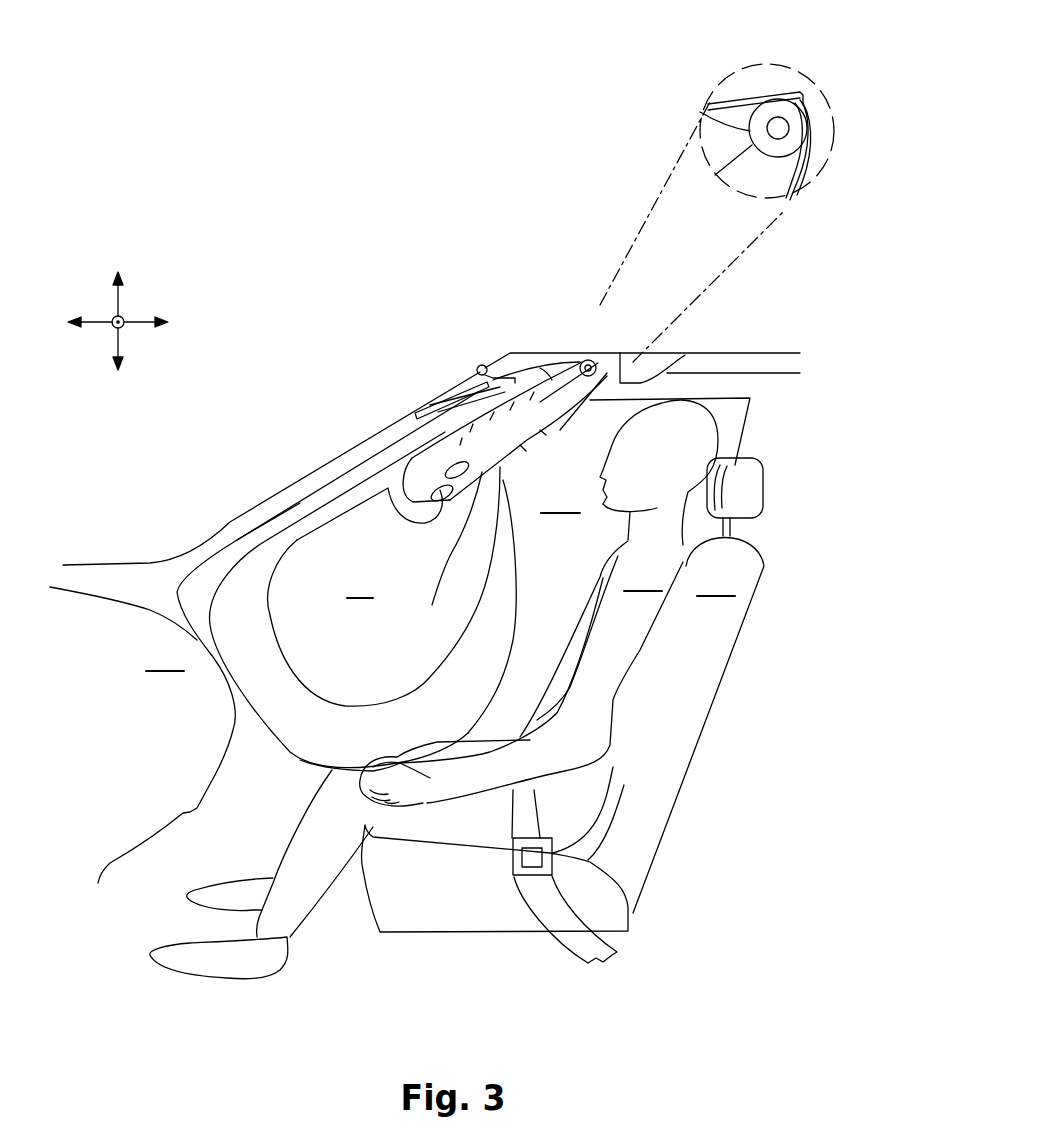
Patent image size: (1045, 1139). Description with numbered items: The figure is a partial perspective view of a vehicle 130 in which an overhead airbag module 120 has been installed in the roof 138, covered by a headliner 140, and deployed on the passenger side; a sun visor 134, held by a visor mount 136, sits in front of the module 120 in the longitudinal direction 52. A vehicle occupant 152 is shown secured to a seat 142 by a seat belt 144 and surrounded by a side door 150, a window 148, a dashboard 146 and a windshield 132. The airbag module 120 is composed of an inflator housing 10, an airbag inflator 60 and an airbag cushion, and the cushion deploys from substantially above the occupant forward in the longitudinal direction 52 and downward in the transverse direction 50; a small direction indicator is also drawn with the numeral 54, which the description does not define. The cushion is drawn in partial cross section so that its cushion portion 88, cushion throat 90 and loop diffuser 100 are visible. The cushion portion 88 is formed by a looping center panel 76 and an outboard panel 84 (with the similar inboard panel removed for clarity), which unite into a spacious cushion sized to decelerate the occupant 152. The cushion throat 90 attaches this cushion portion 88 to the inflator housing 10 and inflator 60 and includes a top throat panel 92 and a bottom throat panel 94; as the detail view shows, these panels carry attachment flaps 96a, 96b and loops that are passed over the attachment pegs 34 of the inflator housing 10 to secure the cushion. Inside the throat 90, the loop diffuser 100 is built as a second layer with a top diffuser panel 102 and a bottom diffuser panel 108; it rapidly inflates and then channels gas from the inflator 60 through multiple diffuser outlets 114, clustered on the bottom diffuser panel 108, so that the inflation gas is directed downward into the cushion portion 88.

The inflator housing 10 is at (703, 110).
The attachment pegs 34 is at (800, 100).
The transverse direction 50 is at (118, 300).
The longitudinal direction 52 is at (135, 320).
The downward direction 54 is at (120, 328).
The airbag inflator 60 is at (800, 130).
The looping center panel 76 is at (252, 697).
The outboard panel 84 is at (384, 586).
The cushion portion 88 is at (222, 500).
The cushion throat 90 is at (553, 306).
The top throat panel 92 is at (548, 364).
The bottom throat panel 94 is at (685, 355).
The attachment flap 96a is at (783, 97).
The attachment flap 96b is at (810, 108).
The loop diffuser 100 is at (455, 362).
The top diffuser panel 102 is at (437, 410).
The bottom diffuser panel 108 is at (470, 534).
The diffuser outlet 114 is at (373, 460).
The airbag module 120 is at (655, 300).
The vehicle 130 is at (310, 362).
The windshield 132 is at (373, 430).
The sun visor 134 is at (412, 412).
The visor mount 136 is at (487, 362).
The roof 138 is at (800, 353).
The headliner 140 is at (800, 373).
The seat 142 is at (563, 695).
The seat belt 144 is at (555, 902).
The dashboard 146 is at (175, 693).
The window 148 is at (434, 689).
The side door 150 is at (770, 393).
The vehicle occupant 152 is at (521, 684).